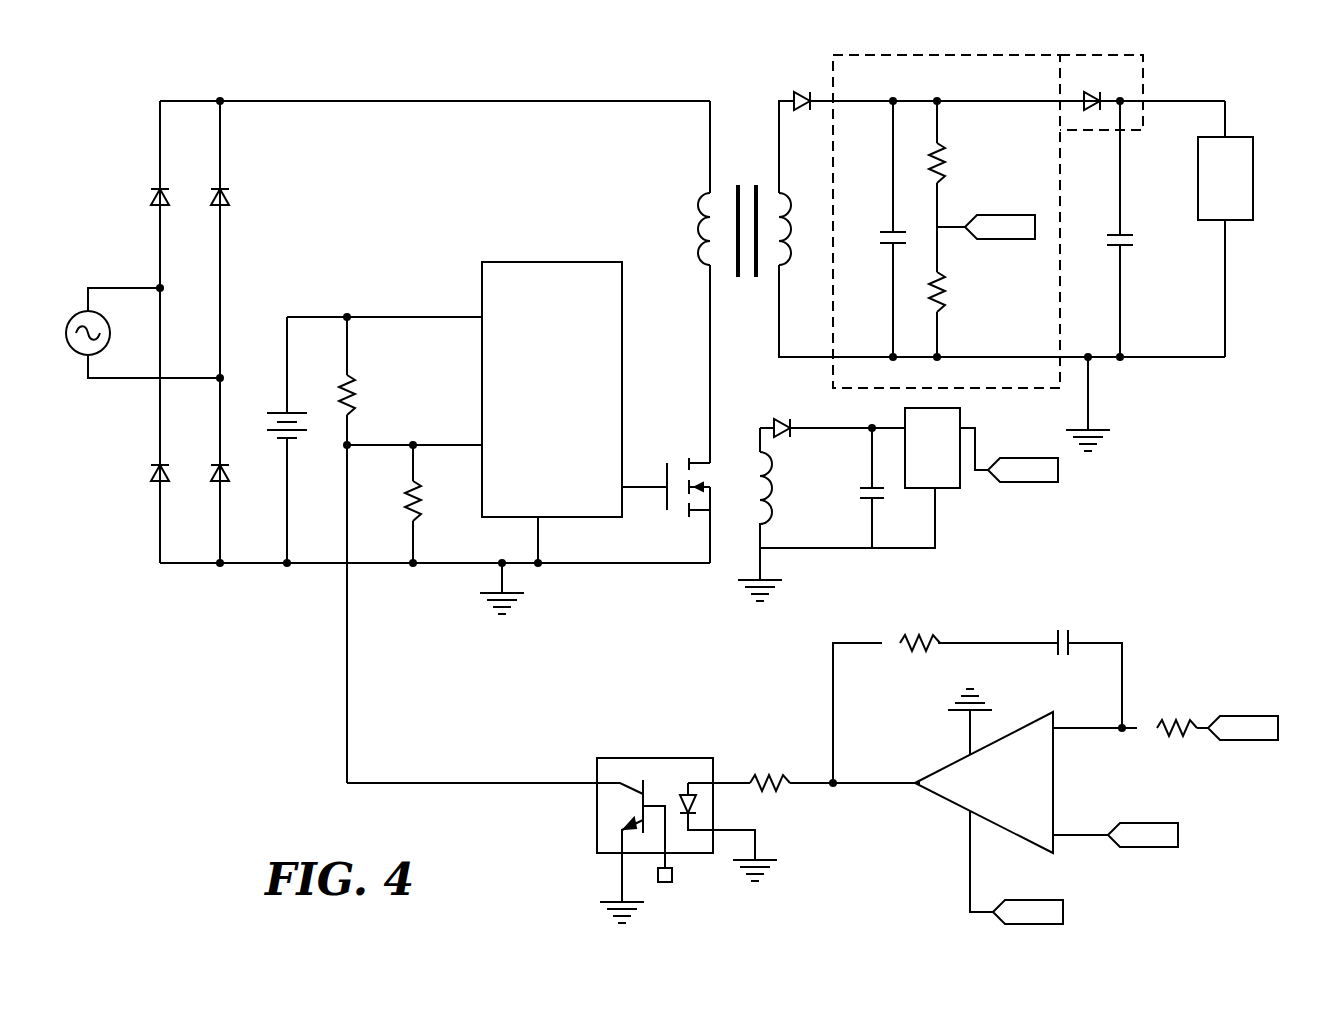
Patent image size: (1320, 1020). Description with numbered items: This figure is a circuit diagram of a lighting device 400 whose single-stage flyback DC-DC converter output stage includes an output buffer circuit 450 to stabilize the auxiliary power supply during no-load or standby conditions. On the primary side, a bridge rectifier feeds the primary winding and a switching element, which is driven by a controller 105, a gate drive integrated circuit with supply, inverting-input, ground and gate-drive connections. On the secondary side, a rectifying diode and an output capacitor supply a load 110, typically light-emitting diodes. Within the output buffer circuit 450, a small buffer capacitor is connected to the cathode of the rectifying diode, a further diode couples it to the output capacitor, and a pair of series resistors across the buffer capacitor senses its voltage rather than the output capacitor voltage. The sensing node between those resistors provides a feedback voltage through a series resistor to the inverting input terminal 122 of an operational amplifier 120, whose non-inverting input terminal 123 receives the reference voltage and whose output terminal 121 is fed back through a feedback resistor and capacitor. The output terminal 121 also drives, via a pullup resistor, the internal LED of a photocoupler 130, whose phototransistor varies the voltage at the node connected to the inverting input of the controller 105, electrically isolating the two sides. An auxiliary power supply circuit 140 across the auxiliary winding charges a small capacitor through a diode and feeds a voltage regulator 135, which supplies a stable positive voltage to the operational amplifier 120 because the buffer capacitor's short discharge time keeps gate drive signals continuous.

The lighting device 400 is at (126, 103).
The controller 105 is at (550, 262).
The output buffer circuit 450 is at (907, 55).
The load 110 is at (1243, 192).
The voltage regulator 135 is at (949, 462).
The auxiliary power supply circuit 140 is at (960, 514).
The photocoupler 130 is at (635, 758).
The operational amplifier 120 is at (950, 806).
The output terminal 121 is at (915, 786).
The inverting input terminal 122 is at (1055, 732).
The non-inverting input terminal 123 is at (1055, 840).